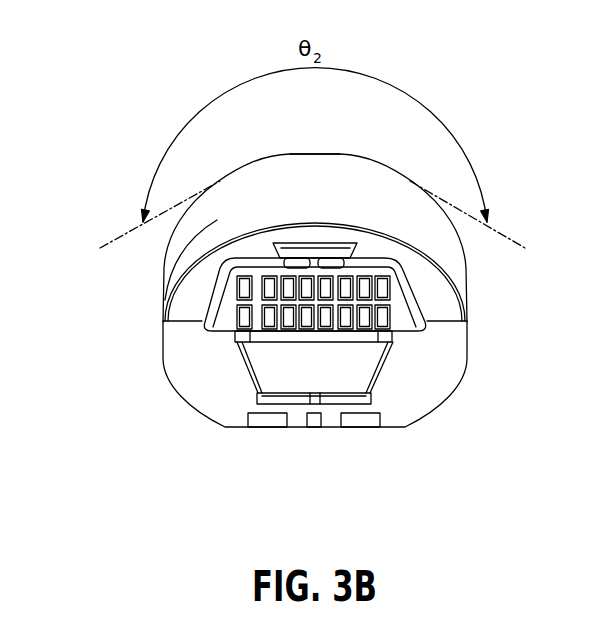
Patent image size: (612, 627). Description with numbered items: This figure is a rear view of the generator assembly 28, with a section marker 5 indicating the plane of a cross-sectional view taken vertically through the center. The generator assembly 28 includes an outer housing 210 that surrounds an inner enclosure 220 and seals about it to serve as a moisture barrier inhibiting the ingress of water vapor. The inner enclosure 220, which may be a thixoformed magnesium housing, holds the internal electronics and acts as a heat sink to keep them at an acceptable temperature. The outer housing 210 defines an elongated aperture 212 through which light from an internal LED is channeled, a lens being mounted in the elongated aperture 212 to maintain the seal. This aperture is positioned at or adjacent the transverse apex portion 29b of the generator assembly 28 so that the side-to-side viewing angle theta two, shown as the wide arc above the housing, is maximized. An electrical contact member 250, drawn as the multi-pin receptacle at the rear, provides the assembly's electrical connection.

The generator assembly 28 is at (112, 120).
The transverse apex portion 29b is at (302, 145).
The outer housing 210 is at (202, 232).
The elongated aperture 212 is at (343, 153).
The inner enclosure 220 is at (440, 298).
The electrical contact member 250 is at (402, 323).
The section line 5- 5 is at (315, 150).